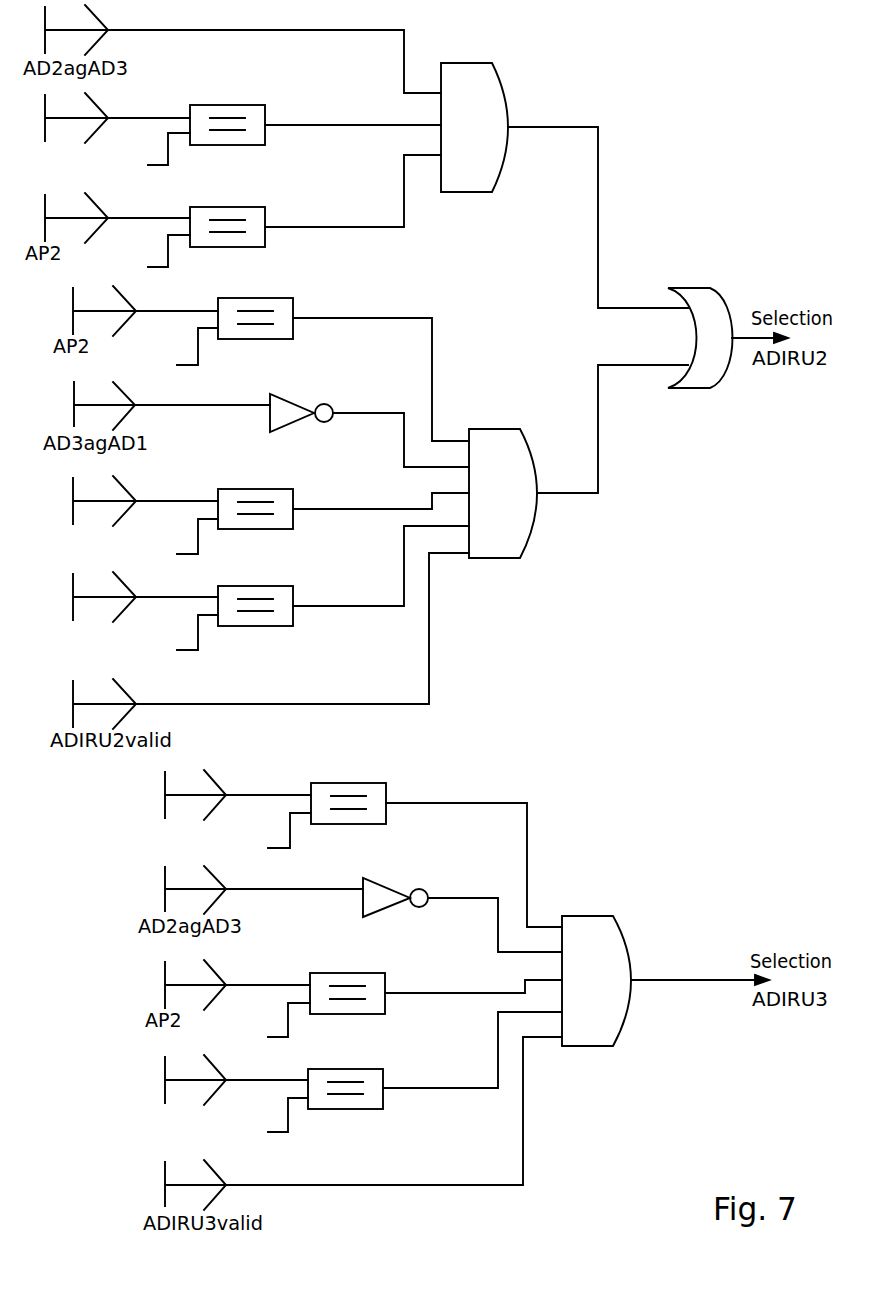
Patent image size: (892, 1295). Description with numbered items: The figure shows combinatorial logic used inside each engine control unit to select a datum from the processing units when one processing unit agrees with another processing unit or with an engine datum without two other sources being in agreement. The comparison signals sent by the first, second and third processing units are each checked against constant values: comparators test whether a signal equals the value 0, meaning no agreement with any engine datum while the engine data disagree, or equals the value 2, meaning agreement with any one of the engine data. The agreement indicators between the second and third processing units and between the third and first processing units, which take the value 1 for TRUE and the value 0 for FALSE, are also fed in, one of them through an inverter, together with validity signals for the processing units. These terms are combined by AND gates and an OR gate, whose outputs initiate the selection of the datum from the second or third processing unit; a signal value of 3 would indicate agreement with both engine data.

The comparison result value zero 0 is at (268, 1137).
The comparison result value two 2 is at (268, 853).
The comparison result value one 1 is at (166, 610).
The comparison result value three 3 is at (181, 707).